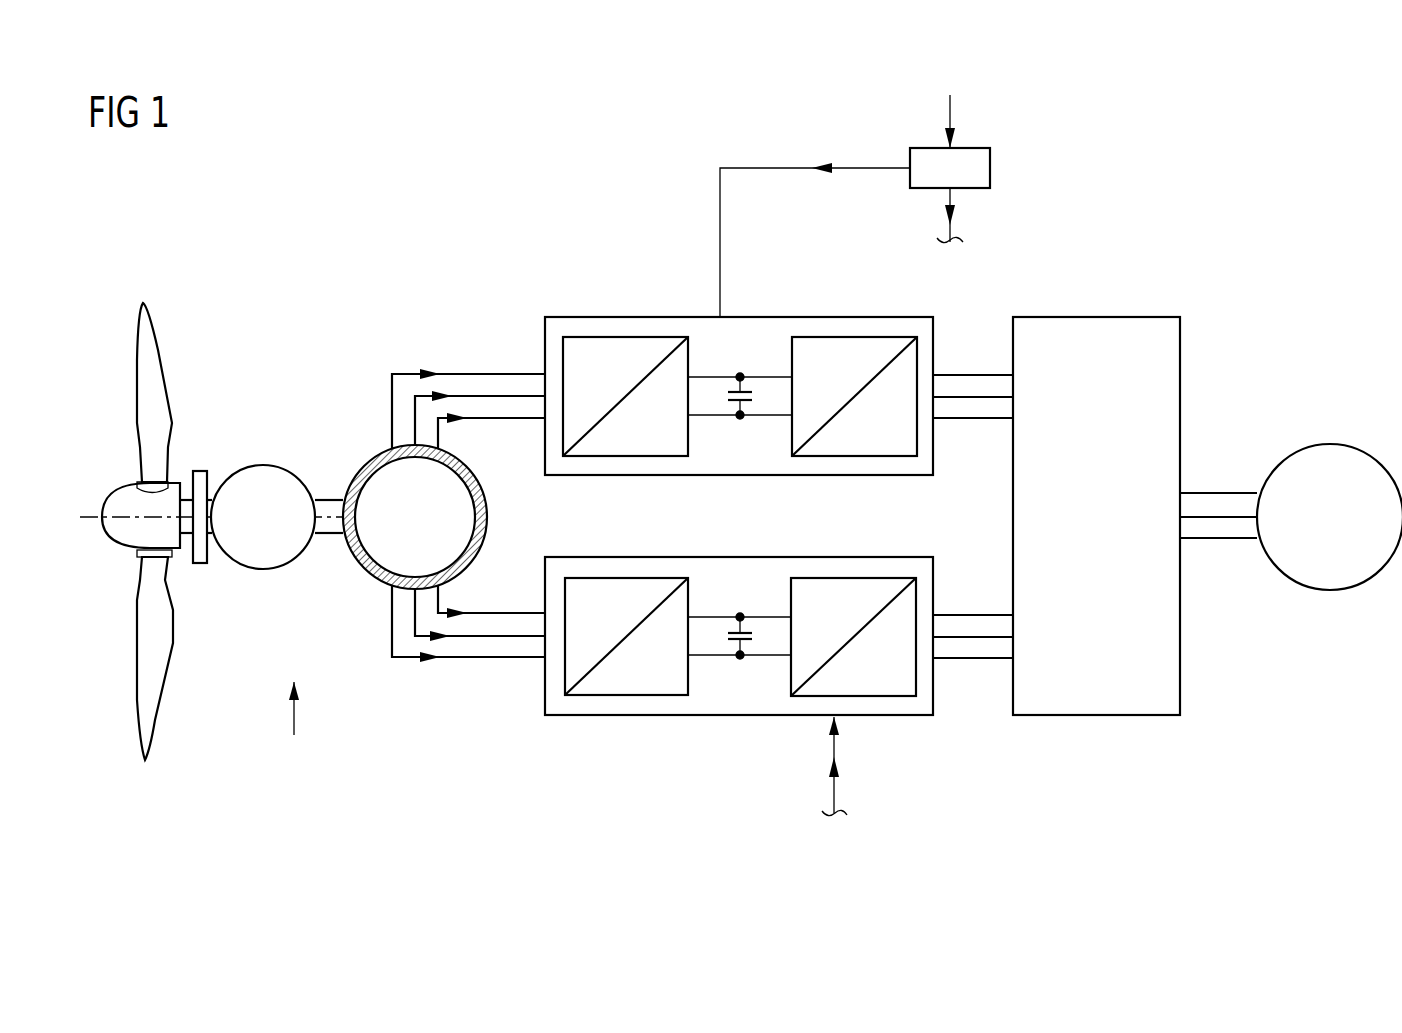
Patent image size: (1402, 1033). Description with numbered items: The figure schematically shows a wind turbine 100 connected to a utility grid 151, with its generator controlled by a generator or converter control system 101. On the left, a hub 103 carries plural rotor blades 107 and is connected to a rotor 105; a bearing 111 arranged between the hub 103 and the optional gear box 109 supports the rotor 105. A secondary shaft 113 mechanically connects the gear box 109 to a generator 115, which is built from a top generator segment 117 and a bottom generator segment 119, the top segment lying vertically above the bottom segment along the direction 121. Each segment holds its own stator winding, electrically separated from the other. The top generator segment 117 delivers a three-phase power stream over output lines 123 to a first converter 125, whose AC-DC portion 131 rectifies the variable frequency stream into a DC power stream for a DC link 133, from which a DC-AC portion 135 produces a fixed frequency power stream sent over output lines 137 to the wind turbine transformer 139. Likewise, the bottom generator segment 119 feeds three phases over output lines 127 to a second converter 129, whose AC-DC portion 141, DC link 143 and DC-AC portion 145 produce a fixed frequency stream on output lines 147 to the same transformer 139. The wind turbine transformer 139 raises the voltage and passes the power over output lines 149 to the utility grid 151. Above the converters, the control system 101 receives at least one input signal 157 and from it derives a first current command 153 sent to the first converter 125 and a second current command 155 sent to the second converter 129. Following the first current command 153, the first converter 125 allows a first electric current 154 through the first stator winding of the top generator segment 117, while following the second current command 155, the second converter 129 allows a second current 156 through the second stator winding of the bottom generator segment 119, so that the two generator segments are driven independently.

The wind turbine 100 is at (612, 185).
The generator or converter control system 101 is at (990, 167).
The hub 103 is at (130, 481).
The rotor 105 is at (186, 535).
The rotor blades 107 is at (173, 652).
The gear box 109 is at (265, 464).
The bearing 111 is at (198, 470).
The secondary shaft 113 is at (327, 500).
The generator 115 is at (403, 360).
The top generator segment 117 is at (462, 455).
The bottom generator segment 119 is at (463, 573).
The vertical direction 121 is at (296, 718).
The output lines 123 is at (515, 417).
The first converter 125 is at (807, 317).
The output lines 127 is at (515, 614).
The second converter 129 is at (740, 717).
The AC-DC portion 131 is at (627, 337).
The DC link 133 is at (752, 348).
The DC-AC portion 135 is at (863, 337).
The output lines 137 is at (975, 418).
The wind turbine transformer 139 is at (1113, 317).
The AC-DC portion 141 is at (617, 578).
The DC link 143 is at (752, 588).
The DC-AC portion 145 is at (852, 578).
The output lines 147 is at (975, 655).
The output lines 149 is at (1222, 537).
The utility grid 151 is at (1330, 443).
The first current command 153 is at (822, 162).
The first electric current 154 is at (455, 416).
The second current command 155 is at (953, 213).
The second current 156 is at (455, 614).
The input signal 157 is at (953, 143).